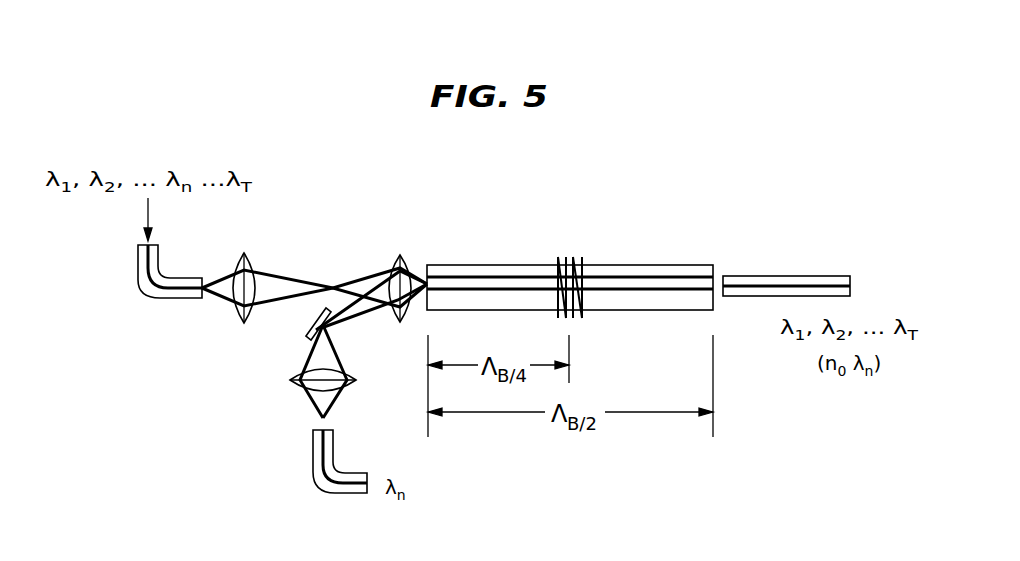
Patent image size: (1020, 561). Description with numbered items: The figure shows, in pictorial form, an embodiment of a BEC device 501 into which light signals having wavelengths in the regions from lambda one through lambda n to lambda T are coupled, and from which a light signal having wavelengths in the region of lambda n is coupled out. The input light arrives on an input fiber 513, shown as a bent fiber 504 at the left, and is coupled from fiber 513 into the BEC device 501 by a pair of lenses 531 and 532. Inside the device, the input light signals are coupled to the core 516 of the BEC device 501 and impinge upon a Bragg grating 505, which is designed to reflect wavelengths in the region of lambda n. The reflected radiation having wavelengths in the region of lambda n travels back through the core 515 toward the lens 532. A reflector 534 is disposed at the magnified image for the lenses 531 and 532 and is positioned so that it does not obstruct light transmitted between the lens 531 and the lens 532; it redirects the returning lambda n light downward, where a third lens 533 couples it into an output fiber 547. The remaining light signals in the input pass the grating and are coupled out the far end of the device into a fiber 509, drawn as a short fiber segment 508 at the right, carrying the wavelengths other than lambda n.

The BEC device 501 is at (498, 265).
The input optical fiber 504 is at (160, 298).
The Bragg grating 505 is at (581, 258).
The output optical fiber 508 is at (752, 276).
The fiber 509 is at (820, 276).
The fiber 513 is at (160, 268).
The core 515 is at (530, 276).
The core 516 is at (640, 290).
The lens 531 is at (244, 255).
The lens 532 is at (400, 257).
The lens 533 is at (292, 380).
The reflector 534 is at (310, 332).
The fiber 547 is at (313, 472).